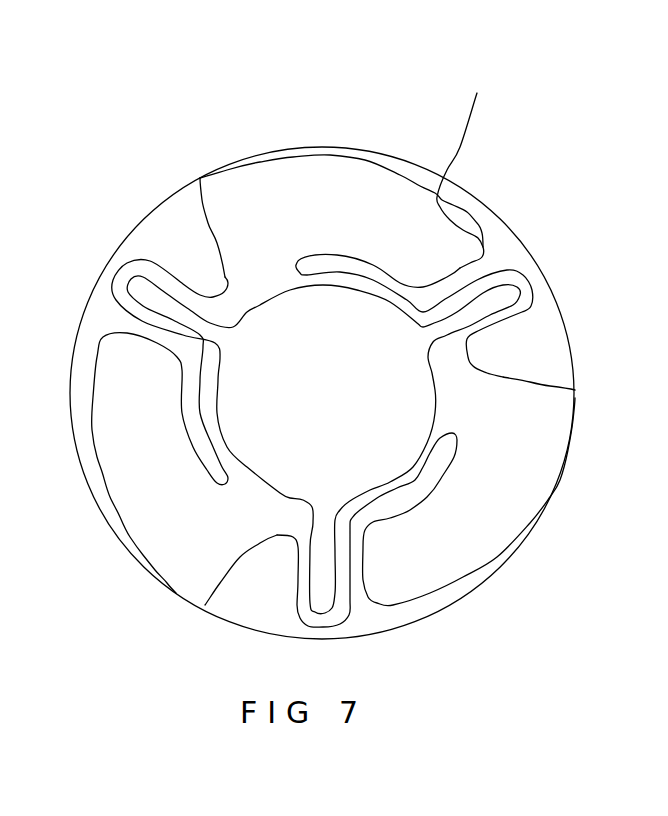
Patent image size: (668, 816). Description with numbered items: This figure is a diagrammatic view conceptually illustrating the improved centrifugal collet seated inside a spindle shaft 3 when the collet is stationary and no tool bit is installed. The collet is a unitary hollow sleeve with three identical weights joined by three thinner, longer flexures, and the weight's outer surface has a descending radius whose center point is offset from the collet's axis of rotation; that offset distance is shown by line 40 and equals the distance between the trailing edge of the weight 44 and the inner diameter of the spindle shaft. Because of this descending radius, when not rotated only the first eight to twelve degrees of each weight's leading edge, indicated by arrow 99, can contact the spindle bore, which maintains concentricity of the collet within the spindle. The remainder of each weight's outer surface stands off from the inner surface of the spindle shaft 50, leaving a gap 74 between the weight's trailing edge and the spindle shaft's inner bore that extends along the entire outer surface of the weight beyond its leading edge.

The spindle shaft 3 is at (486, 203).
The line 40 is at (493, 230).
The trailing edge of the weight 44 is at (464, 167).
The inner surface of the spindle shaft 50 is at (378, 163).
The gap 74 is at (467, 197).
The arrow 99 is at (208, 150).